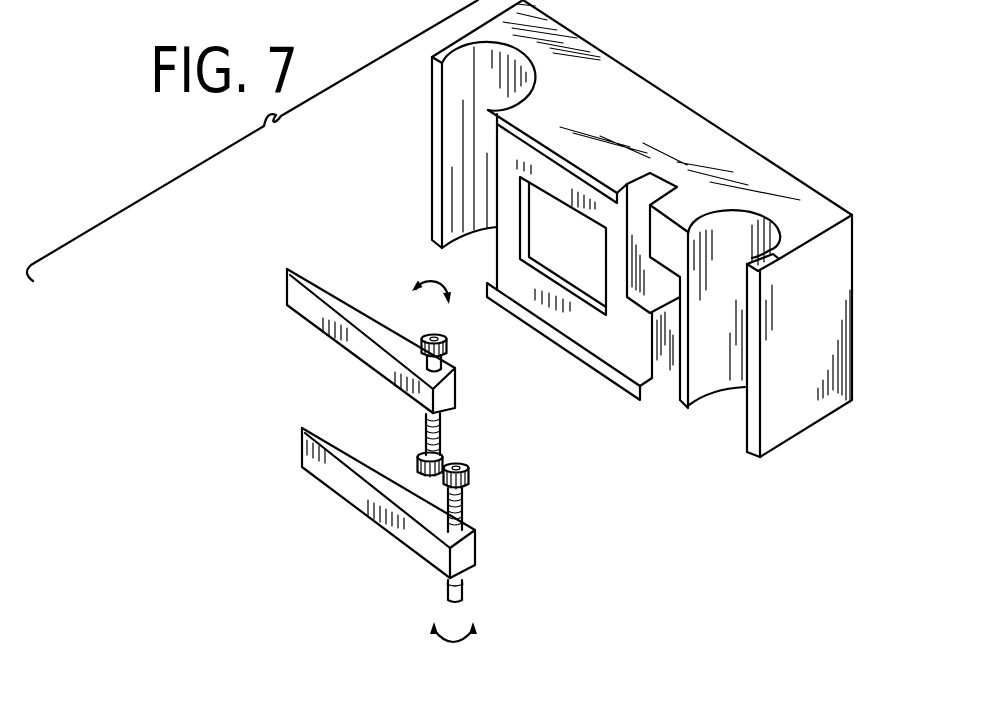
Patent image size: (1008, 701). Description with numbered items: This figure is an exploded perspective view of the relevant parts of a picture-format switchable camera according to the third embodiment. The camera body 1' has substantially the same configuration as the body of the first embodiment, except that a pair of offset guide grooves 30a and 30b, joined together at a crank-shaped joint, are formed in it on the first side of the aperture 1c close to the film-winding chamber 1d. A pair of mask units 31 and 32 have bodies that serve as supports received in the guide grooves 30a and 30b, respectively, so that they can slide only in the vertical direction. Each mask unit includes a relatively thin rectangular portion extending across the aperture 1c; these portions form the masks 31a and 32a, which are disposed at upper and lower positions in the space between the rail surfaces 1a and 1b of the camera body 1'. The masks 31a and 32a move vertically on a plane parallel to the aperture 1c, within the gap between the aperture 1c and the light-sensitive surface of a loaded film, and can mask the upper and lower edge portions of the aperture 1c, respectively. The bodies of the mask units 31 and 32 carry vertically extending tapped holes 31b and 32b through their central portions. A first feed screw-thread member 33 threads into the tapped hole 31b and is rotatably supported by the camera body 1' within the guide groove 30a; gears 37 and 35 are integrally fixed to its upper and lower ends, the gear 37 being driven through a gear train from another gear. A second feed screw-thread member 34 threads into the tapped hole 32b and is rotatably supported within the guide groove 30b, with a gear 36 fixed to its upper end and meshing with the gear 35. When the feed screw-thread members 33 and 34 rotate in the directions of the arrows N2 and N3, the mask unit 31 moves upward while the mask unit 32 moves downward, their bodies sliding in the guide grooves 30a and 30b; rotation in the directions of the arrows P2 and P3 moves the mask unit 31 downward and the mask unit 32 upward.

The camera body 1' is at (631, 250).
The rail surface 1a is at (500, 133).
The rail surface 1b is at (596, 367).
The aperture 1c is at (545, 228).
The film-winding chamber 1d is at (733, 257).
The guide groove 30a is at (650, 191).
The guide groove 30b is at (672, 387).
The mask unit 31 is at (412, 313).
The mask 31a is at (304, 290).
The tapped hole 31b is at (448, 368).
The mask unit 32 is at (433, 524).
The mask 32a is at (338, 478).
The tapped hole 32b is at (478, 530).
The first feed screw-thread member 33 is at (441, 437).
The second feed screw-thread member 34 is at (463, 506).
The gear 35 is at (418, 462).
The gear 36 is at (469, 473).
The gear 37 is at (420, 351).
The arrow P2 is at (411, 284).
The arrow N2 is at (470, 312).
The arrow P3 is at (432, 625).
The arrow N3 is at (498, 625).